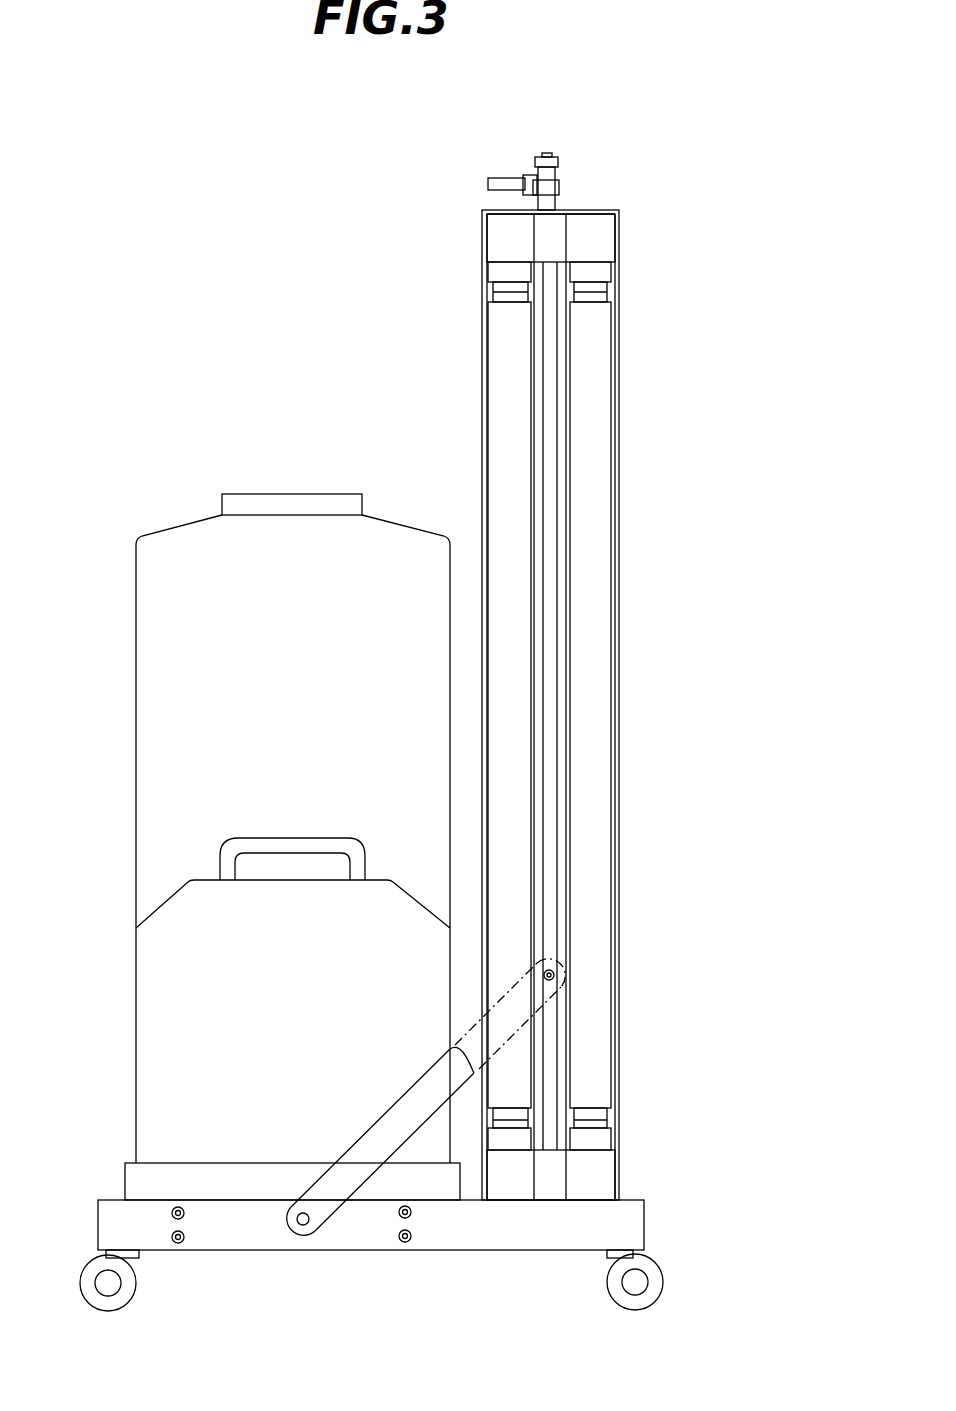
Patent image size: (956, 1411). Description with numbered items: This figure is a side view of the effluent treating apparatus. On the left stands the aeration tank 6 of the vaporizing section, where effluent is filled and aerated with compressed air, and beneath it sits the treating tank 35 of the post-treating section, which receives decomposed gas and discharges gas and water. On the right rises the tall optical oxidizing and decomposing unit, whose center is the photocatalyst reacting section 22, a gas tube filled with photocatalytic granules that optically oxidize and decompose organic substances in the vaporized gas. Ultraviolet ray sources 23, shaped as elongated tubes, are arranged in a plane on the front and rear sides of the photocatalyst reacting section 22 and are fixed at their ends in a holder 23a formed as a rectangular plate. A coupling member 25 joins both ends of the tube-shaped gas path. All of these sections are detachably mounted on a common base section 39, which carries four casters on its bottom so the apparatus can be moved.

The aeration tank 6 is at (168, 661).
The photocatalyst reacting section 22 is at (552, 372).
The ultraviolet ray sources 23 is at (500, 326).
The holder 23a is at (502, 238).
The coupling member 25 is at (557, 229).
The treating tank 35 is at (162, 1003).
The base section 39 is at (630, 1228).